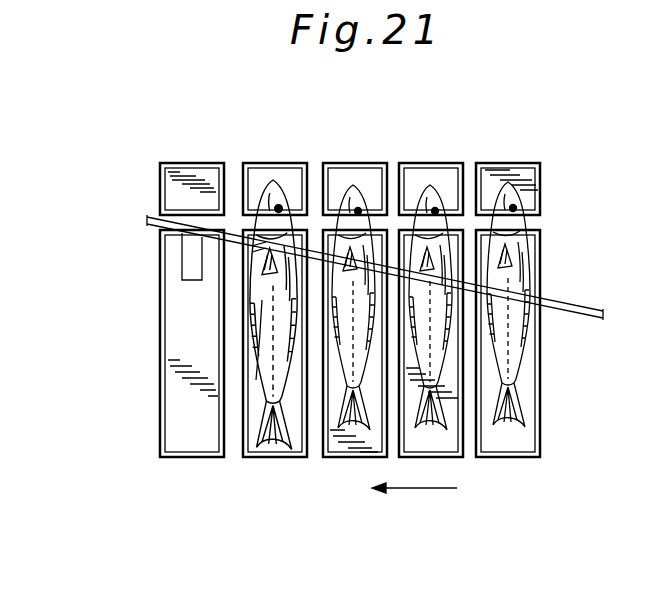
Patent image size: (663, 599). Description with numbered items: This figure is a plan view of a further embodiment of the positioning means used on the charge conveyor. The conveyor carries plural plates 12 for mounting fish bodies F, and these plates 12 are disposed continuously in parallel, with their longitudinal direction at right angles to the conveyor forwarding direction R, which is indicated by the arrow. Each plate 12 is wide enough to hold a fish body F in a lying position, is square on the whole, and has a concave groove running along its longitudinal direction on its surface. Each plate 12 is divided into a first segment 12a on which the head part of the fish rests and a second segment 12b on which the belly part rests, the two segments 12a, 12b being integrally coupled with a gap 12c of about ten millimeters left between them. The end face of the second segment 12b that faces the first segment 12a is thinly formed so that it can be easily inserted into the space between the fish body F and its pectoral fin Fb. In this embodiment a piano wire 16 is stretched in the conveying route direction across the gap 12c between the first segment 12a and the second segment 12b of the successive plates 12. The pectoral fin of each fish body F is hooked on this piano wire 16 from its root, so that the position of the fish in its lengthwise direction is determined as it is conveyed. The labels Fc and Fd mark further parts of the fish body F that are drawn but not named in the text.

The plate 12 is at (75, 172).
The first segment 12a is at (160, 184).
The second segment 12b is at (173, 290).
The gap 12c is at (188, 263).
The piano wire 16 is at (316, 258).
The fish body F is at (283, 377).
The pectoral fin Fb is at (263, 312).
The fish gill/pectoral region Fc is at (247, 240).
The fish head Fd is at (282, 182).
The conveyor forwarding direction R is at (417, 489).